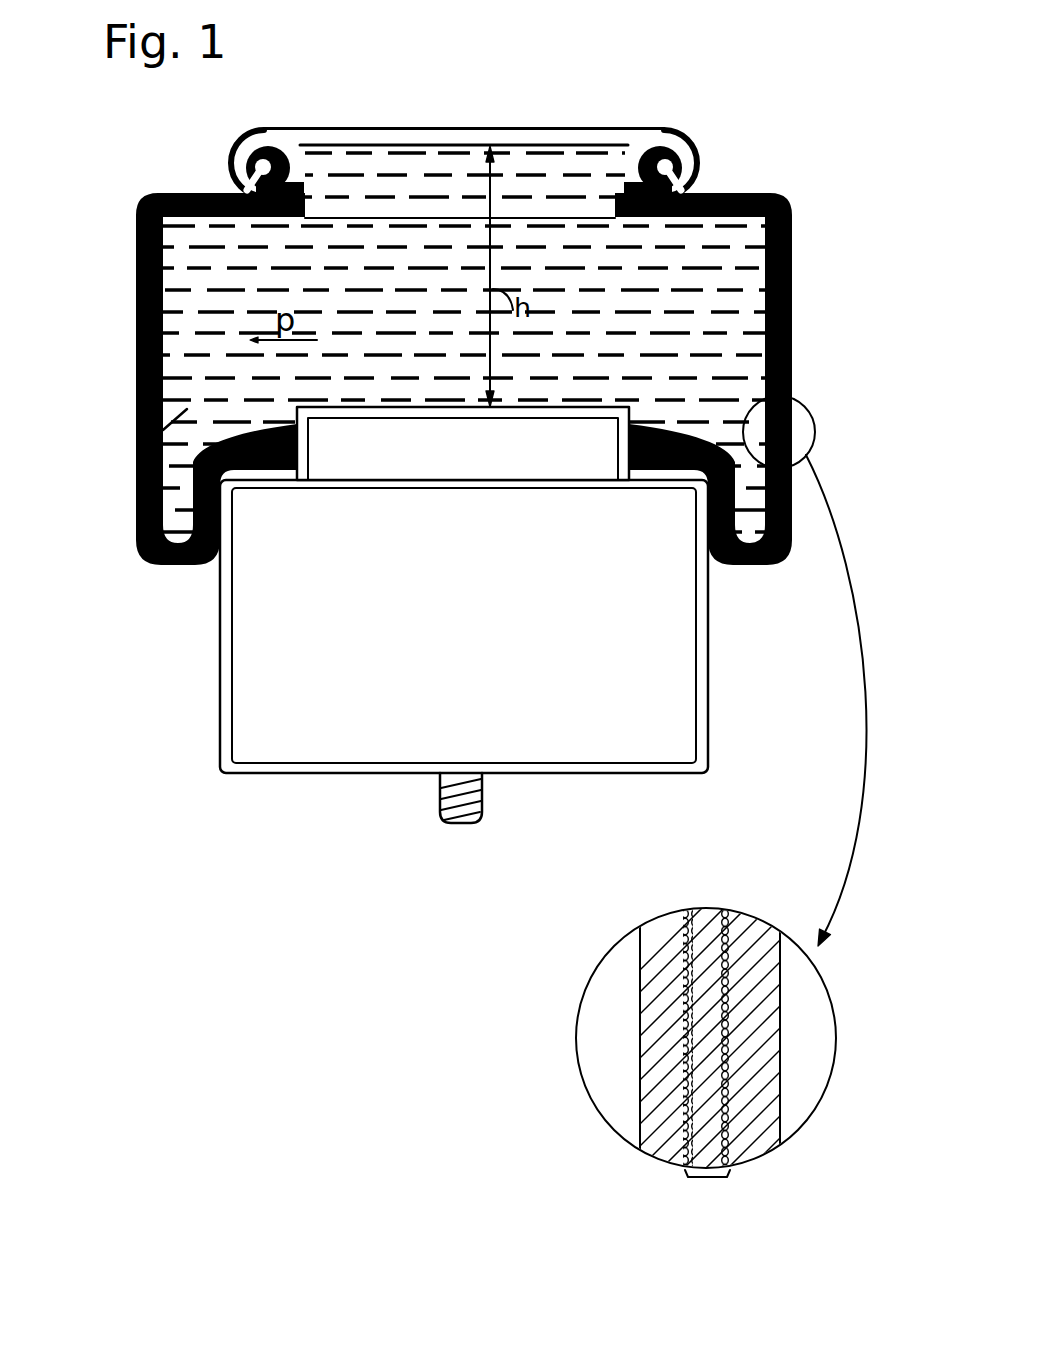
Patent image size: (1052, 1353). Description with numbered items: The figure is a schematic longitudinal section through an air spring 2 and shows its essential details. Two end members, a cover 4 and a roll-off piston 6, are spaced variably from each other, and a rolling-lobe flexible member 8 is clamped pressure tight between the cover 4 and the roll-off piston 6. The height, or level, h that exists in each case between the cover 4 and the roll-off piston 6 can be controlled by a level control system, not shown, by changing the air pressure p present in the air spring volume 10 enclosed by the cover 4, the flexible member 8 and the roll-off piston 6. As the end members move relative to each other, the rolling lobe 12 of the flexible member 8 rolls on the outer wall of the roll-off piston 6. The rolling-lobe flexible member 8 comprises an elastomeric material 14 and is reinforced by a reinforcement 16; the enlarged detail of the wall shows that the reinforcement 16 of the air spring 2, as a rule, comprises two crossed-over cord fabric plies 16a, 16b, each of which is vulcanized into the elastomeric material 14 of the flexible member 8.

The air spring 2 is at (261, 820).
The cover 4 is at (643, 142).
The roll-off piston 6 is at (655, 703).
The rolling-lobe flexible member 8 is at (125, 326).
The air spring volume 10 is at (136, 446).
The rolling lobe 12 is at (767, 563).
The elastomeric material 14 is at (793, 361).
The reinforcement 16 is at (706, 1186).
The cord fabric ply 16a is at (688, 1098).
The cord fabric ply 16b is at (735, 1085).